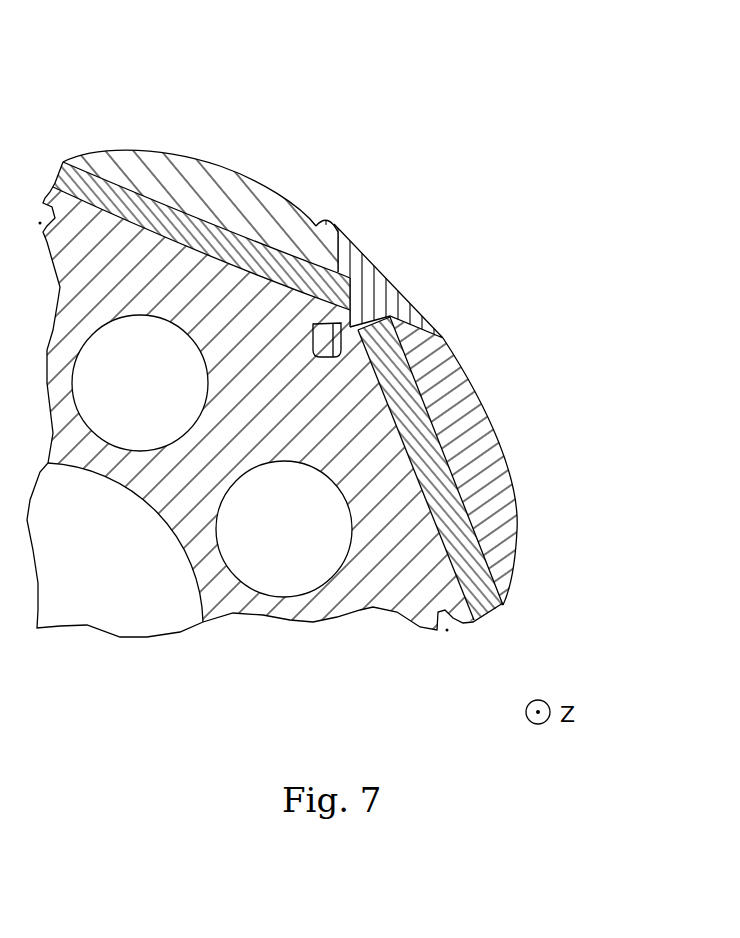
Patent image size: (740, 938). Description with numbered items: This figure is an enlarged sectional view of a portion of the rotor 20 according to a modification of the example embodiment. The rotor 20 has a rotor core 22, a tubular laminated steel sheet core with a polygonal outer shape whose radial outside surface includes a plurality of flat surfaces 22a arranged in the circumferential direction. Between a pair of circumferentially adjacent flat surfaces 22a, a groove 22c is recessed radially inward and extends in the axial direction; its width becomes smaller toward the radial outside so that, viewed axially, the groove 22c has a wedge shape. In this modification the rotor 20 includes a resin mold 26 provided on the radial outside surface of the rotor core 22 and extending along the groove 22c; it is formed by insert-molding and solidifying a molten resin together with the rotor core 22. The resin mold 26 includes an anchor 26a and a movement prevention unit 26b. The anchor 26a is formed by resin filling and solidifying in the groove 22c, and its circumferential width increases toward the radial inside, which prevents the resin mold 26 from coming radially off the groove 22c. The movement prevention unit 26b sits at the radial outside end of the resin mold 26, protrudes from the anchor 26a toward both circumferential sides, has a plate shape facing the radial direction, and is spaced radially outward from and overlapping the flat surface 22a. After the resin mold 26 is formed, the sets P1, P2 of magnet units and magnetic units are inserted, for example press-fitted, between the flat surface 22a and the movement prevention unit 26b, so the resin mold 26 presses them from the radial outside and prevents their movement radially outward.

The rotor 20 is at (327, 360).
The rotor core 22 is at (375, 592).
The flat surface 22a is at (148, 225).
The groove 22c is at (351, 293).
The resin mold 26 is at (425, 253).
The anchor 26a is at (334, 348).
The movement prevention unit 26b is at (338, 233).
The set P1 is at (219, 170).
The set P2 is at (488, 417).